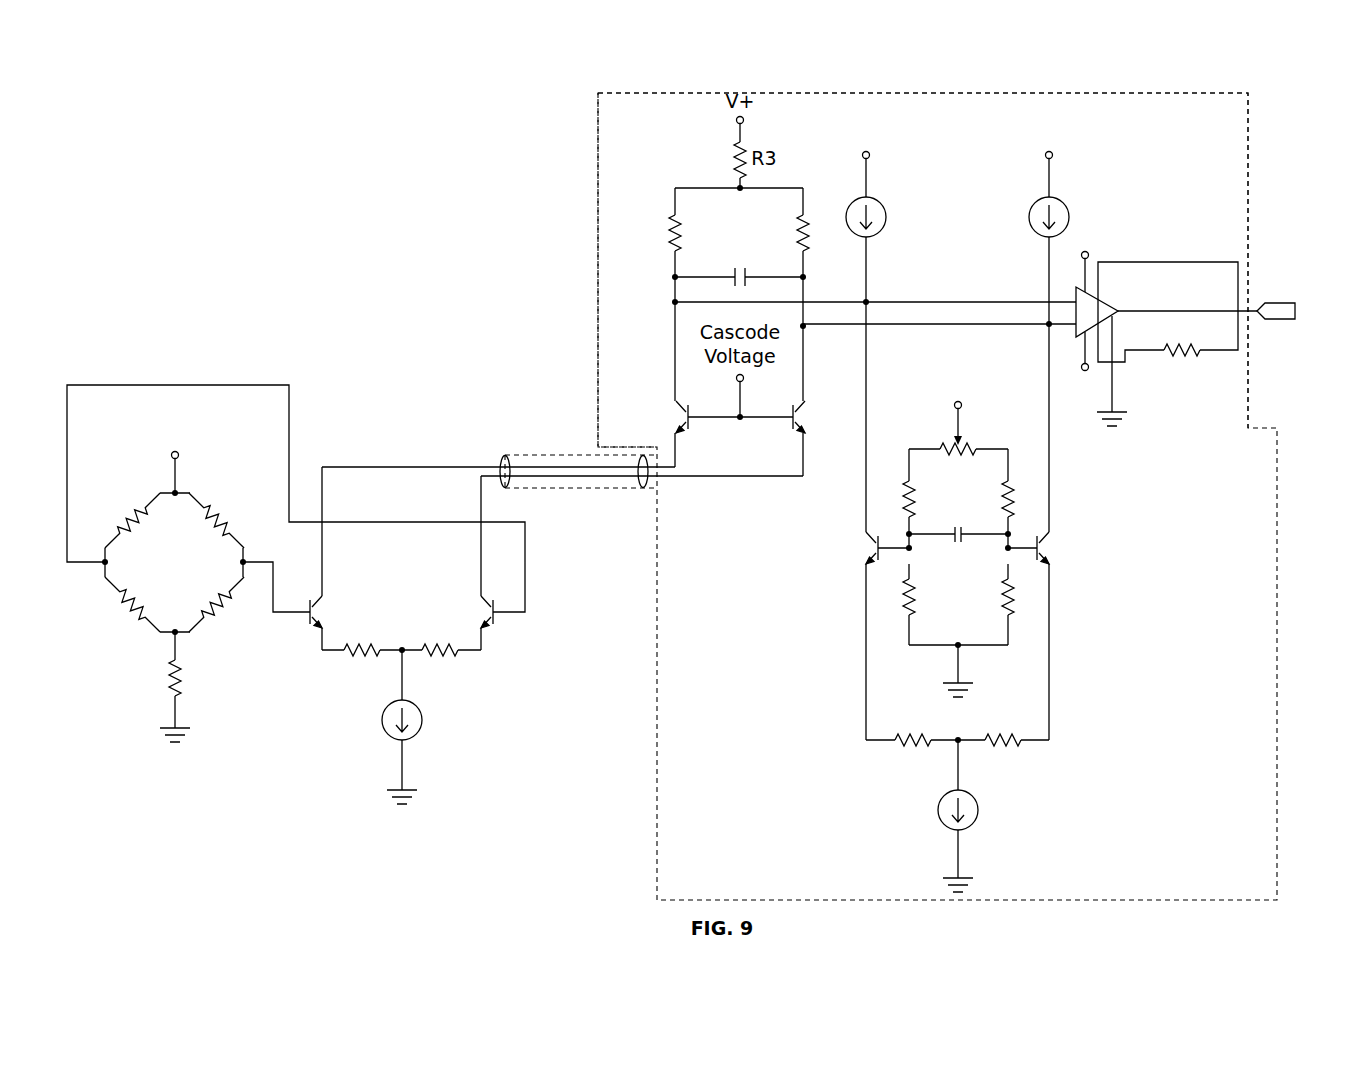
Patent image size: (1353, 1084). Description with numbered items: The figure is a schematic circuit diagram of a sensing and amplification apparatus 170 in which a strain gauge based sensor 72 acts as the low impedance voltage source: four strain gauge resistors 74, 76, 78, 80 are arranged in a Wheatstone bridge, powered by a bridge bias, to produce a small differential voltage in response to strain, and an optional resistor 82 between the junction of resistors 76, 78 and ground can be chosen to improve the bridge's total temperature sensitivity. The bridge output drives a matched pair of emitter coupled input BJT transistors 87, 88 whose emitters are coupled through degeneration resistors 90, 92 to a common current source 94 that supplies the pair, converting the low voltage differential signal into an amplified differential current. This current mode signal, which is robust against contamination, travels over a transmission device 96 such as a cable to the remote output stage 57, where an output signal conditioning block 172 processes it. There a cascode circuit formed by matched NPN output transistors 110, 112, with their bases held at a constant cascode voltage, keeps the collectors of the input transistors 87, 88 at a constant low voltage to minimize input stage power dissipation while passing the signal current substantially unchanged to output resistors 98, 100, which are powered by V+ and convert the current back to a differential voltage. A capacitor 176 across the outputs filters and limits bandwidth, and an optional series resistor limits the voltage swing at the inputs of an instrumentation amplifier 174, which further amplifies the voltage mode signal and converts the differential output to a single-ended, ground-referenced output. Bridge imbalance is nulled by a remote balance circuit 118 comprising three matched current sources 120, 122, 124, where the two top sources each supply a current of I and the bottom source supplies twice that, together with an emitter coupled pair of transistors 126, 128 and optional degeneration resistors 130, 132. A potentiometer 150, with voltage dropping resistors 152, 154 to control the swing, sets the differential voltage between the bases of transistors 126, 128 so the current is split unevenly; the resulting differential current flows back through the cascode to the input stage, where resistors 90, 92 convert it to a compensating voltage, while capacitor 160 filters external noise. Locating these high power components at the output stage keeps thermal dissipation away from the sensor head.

The output stage 57 is at (1280, 630).
The strain gauge based sensor 72 is at (176, 561).
The resistor 74 is at (208, 507).
The resistor 76 is at (212, 613).
The resistor 78 is at (137, 611).
The resistor 80 is at (146, 506).
The resistor 82 is at (182, 697).
The input BJT transistor 87 is at (330, 598).
The input BJT transistor 88 is at (475, 598).
The degeneration resistor 90 is at (360, 660).
The degeneration resistor 92 is at (452, 660).
The current source 94 is at (422, 720).
The transmission device 96 is at (570, 455).
The output resistor 98 is at (672, 225).
The output resistor 100 is at (800, 222).
The output transistor 110 is at (697, 430).
The output transistor 112 is at (808, 408).
The remote balance circuit 118 is at (941, 635).
The current source 120 is at (872, 203).
The current source 122 is at (1046, 203).
The current source 124 is at (980, 810).
The transistor 126 is at (887, 521).
The transistor 128 is at (1028, 521).
The degeneration resistor 130 is at (912, 732).
The degeneration resistor 132 is at (1004, 732).
The potentiometer 150 is at (974, 444).
The resistor 152 is at (906, 487).
The resistor 154 is at (1012, 487).
The capacitor 160 is at (960, 552).
The sensing and amplification apparatus 170 is at (483, 388).
The output signal conditioning block 172 is at (1255, 222).
The instrumentation amplifier 174 is at (1152, 382).
The capacitor 176 is at (736, 266).